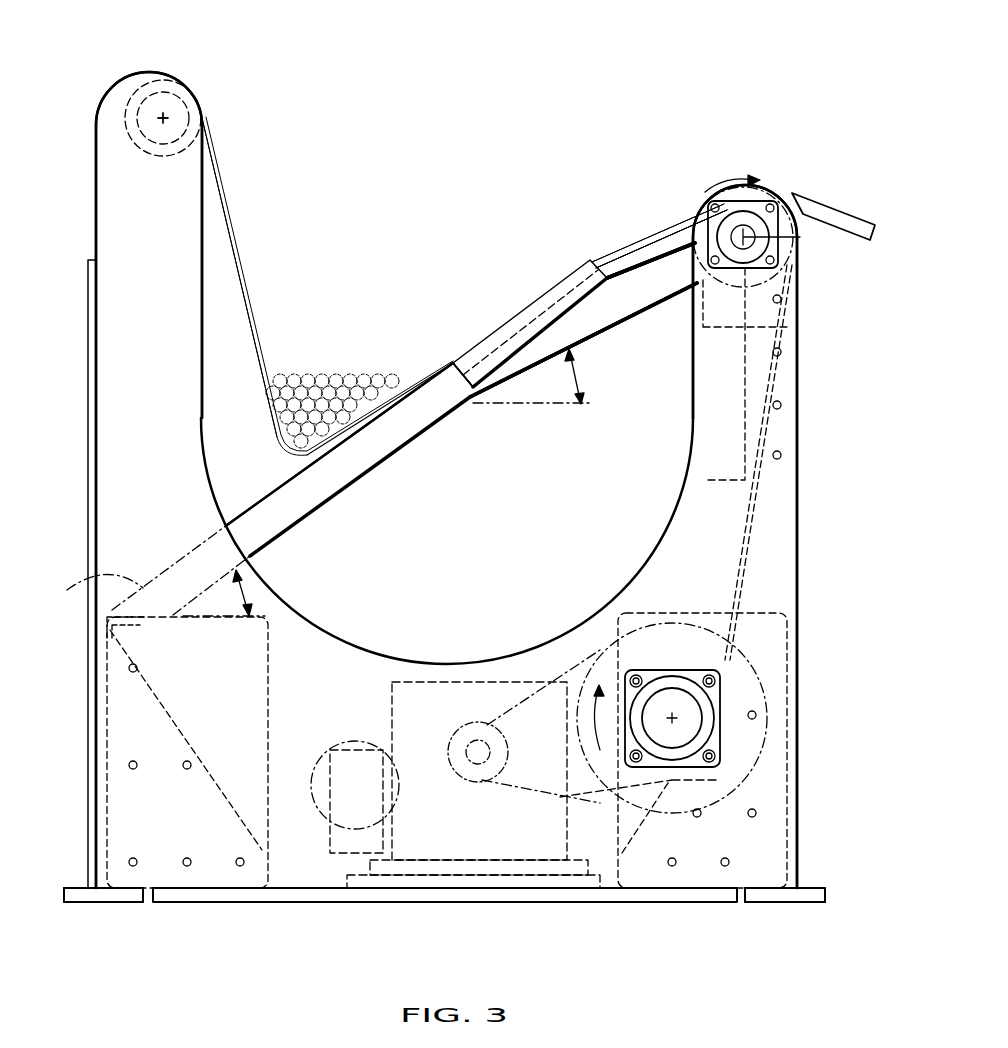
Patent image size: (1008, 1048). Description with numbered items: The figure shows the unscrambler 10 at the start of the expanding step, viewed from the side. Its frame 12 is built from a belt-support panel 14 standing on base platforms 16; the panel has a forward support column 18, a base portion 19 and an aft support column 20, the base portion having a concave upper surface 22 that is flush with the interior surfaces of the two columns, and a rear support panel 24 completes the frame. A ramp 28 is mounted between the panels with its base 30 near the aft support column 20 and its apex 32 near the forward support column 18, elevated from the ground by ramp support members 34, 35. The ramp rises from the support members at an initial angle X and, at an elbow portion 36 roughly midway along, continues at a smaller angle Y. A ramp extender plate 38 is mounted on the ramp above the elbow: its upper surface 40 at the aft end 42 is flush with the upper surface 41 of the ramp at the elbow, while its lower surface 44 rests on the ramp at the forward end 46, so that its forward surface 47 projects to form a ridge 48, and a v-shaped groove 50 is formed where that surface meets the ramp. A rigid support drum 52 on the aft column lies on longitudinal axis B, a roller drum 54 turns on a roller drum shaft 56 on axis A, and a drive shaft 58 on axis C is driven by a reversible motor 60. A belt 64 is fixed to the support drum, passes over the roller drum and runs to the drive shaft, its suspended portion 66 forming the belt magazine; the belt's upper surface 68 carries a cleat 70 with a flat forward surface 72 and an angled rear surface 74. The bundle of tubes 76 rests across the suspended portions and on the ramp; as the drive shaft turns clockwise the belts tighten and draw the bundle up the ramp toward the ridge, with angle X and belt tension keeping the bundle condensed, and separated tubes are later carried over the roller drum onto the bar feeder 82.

The unscrambler 10 is at (285, 937).
The frame 12 is at (803, 580).
The belt-support panel 14 is at (247, 657).
The base platform 16 is at (122, 903).
The forward support column 18 is at (717, 393).
The base portion 19 is at (282, 781).
The aft support column 20 is at (187, 210).
The concave upper surface 22 is at (400, 657).
The rear support panel 24 is at (87, 372).
The ramp 28 is at (355, 470).
The base 30 is at (143, 571).
The apex 32 is at (703, 192).
The ramp support member 34 is at (155, 727).
The ramp support member 35 is at (797, 328).
The elbow portion 36 is at (477, 412).
The ramp extender plate 38 is at (497, 350).
The upper surface 40 is at (537, 293).
The upper surface 41 is at (245, 510).
The aft end 42 is at (457, 363).
The lower surface 44 is at (567, 350).
The forward end 46 is at (607, 282).
The forward surface 47 is at (608, 270).
The ridge 48 is at (591, 260).
The v-shaped groove 50 is at (657, 248).
The rigid support drum 52 is at (158, 68).
The roller drum 54 is at (757, 186).
The roller drum shaft 56 is at (792, 253).
The drive shaft 58 is at (668, 698).
The reversible motor 60 is at (507, 838).
The belt 64 is at (233, 247).
The suspended portion 66 is at (455, 340).
The upper surface 68 is at (260, 310).
The cleat 70 is at (677, 205).
The forward surface 72 is at (678, 208).
The rear surface 74 is at (670, 220).
The bundle of tubes 76 is at (335, 387).
The bar feeder 82 is at (828, 207).
The longitudinal axis A is at (743, 237).
The longitudinal axis B is at (163, 118).
The longitudinal axis C is at (672, 718).
The initial angle X is at (265, 580).
The angle Y is at (544, 393).